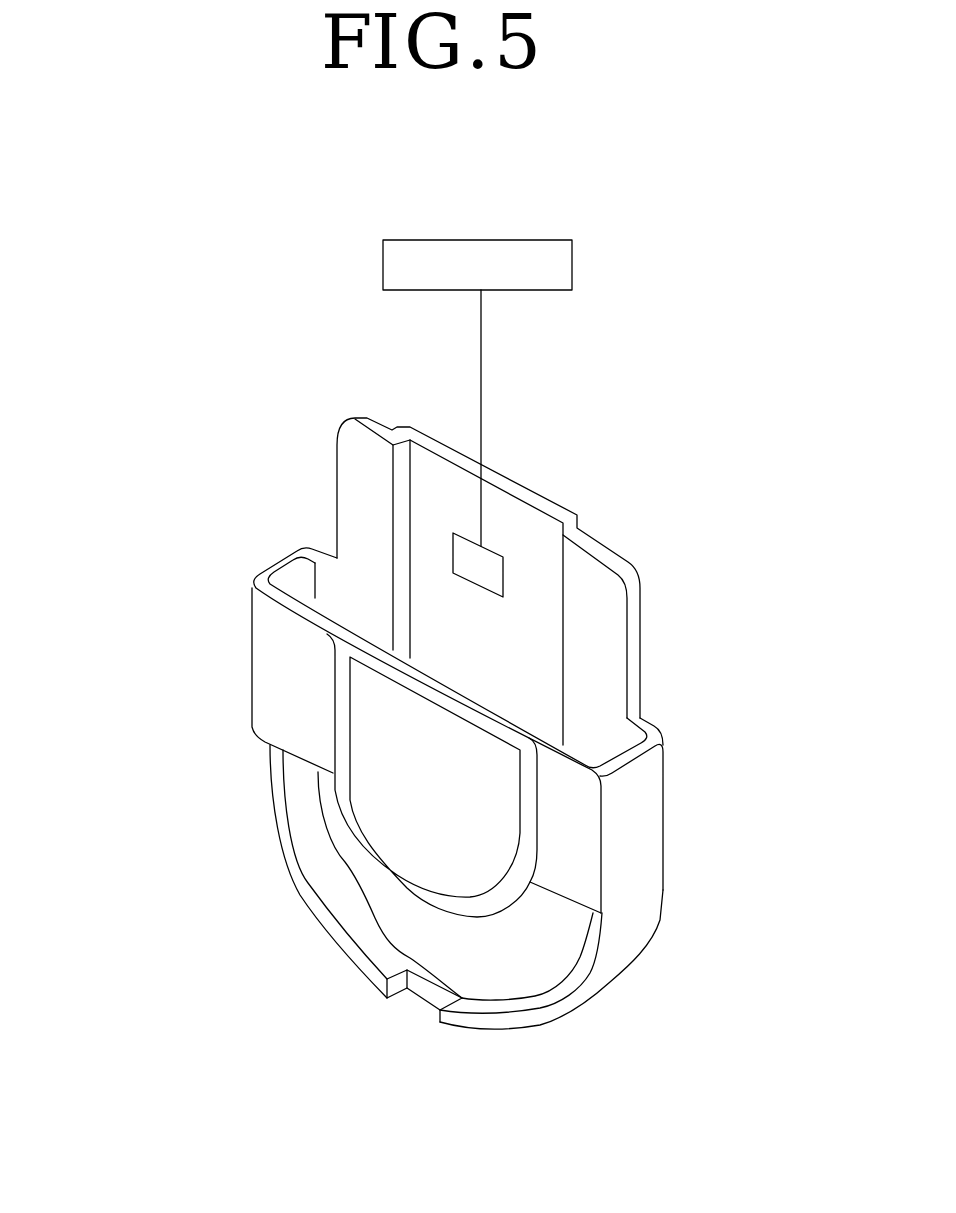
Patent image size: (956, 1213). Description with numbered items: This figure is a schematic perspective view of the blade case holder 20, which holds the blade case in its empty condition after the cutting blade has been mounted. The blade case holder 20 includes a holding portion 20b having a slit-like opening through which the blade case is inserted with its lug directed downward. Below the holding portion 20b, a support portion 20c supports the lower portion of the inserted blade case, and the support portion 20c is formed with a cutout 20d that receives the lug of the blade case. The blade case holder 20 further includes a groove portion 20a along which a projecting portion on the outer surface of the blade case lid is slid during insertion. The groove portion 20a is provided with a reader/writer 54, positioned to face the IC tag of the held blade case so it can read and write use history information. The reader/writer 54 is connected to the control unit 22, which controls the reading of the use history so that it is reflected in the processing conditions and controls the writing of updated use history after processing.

The blade case holder 20 is at (140, 620).
The groove portion 20a is at (423, 545).
The holding portion 20b is at (378, 710).
The support portion 20c is at (343, 890).
The cutout 20d is at (423, 990).
The control unit 22 is at (463, 240).
The reader/writer 54 is at (490, 563).